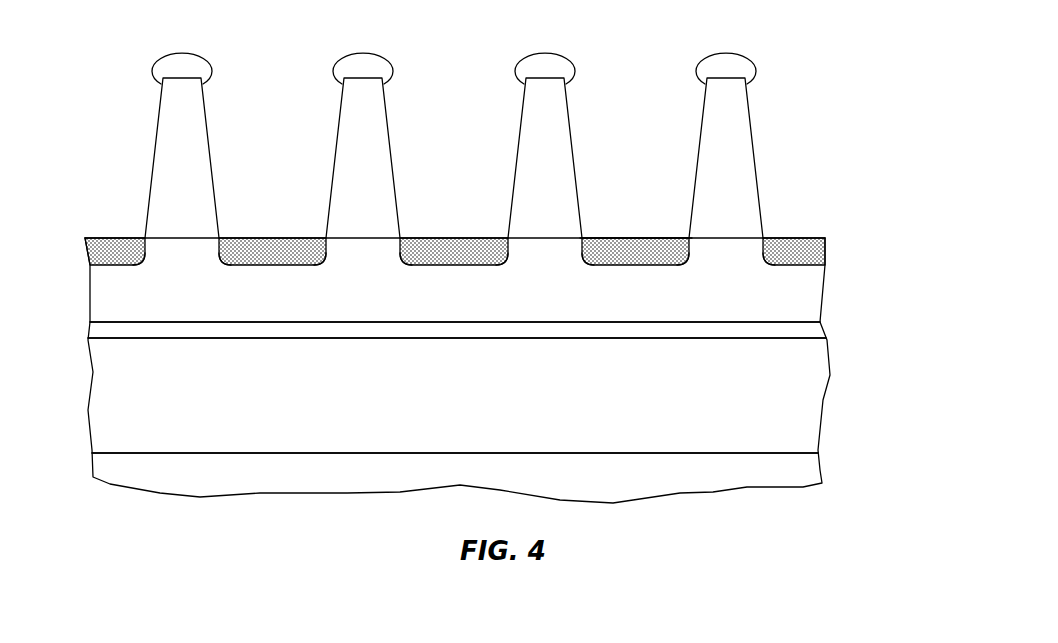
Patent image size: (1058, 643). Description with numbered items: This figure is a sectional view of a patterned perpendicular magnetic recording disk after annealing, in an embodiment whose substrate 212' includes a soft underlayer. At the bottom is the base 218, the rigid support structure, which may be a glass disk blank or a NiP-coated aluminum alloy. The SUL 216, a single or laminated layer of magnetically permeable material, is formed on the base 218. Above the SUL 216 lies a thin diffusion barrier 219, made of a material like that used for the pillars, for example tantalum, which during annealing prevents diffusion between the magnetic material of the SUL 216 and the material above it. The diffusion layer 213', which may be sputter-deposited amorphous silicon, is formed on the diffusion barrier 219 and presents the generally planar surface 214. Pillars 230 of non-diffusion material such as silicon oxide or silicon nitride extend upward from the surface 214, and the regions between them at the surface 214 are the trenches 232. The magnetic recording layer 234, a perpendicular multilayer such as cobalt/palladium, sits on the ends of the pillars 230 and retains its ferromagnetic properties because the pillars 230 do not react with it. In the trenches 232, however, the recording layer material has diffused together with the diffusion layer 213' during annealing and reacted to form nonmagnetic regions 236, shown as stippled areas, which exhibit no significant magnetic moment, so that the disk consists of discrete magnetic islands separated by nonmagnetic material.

The substrate 212' is at (525, 290).
The diffusion layer 213' is at (490, 280).
The surface 214 is at (717, 238).
The SUL 216 is at (815, 396).
The base 218 is at (812, 468).
The diffusion barrier 219 is at (805, 332).
The pillars 230 is at (193, 140).
The trenches 232 is at (115, 238).
The magnetic recording layer 234 is at (180, 58).
The nonmagnetic regions 236 is at (118, 267).